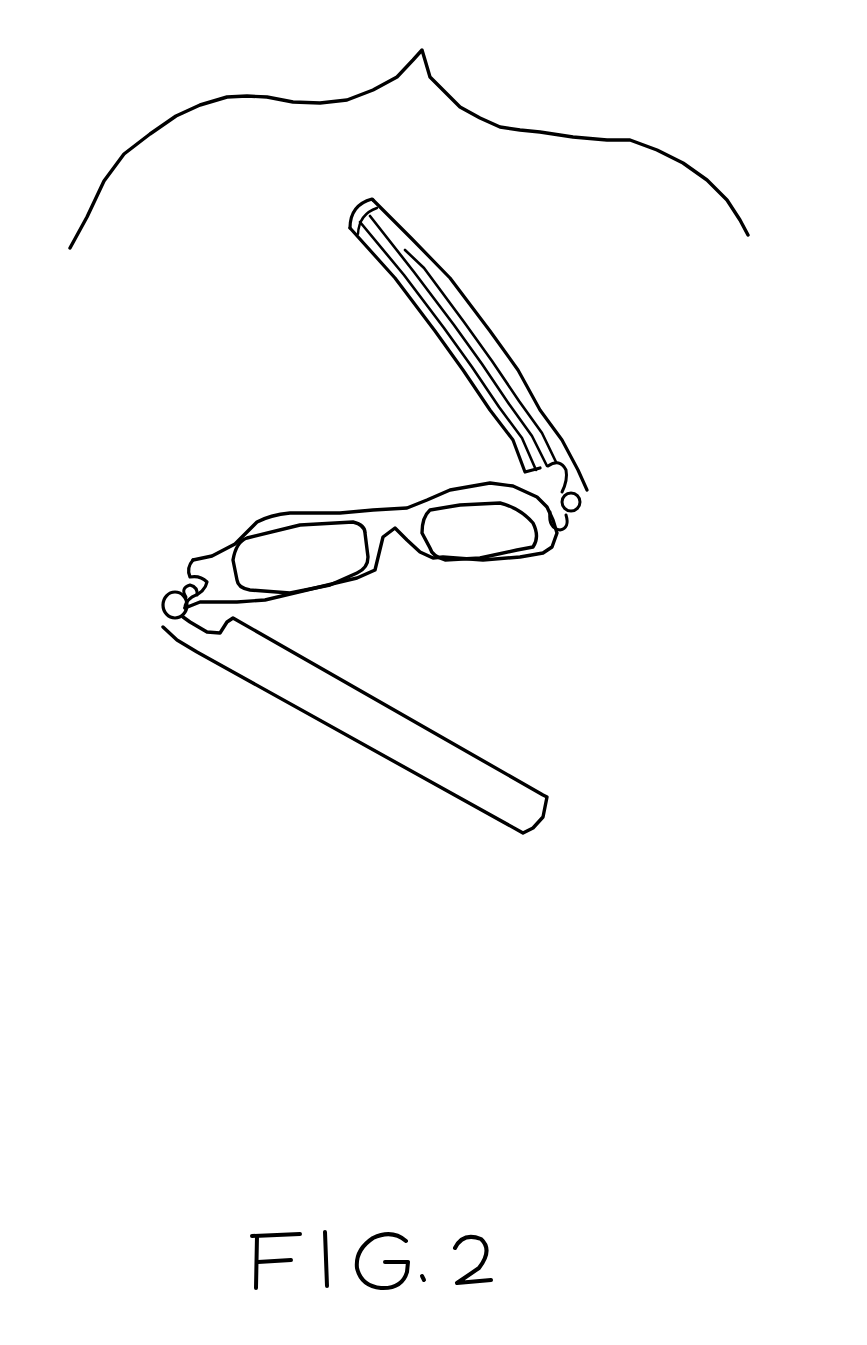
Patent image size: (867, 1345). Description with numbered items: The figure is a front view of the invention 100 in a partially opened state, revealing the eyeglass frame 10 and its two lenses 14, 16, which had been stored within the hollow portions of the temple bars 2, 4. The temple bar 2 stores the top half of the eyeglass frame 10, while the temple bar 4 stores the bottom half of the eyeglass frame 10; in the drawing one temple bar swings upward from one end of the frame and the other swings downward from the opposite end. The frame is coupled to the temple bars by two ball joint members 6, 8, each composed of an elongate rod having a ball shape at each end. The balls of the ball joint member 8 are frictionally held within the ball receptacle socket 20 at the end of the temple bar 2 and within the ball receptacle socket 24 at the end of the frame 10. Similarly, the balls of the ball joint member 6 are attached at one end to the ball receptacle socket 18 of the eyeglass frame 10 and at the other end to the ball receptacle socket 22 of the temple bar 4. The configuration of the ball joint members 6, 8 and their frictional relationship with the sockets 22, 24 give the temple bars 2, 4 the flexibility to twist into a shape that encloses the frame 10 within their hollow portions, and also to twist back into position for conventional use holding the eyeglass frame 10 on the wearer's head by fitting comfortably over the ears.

The invention 100 is at (409, 125).
The temple bar 2 is at (487, 317).
The temple bar 4 is at (407, 742).
The ball joint member 6 is at (186, 597).
The ball joint member 8 is at (573, 522).
The eyeglass frame 10 is at (287, 517).
The lens 14 is at (337, 578).
The lens 16 is at (487, 547).
The ball receptacle socket 18 is at (193, 560).
The ball receptacle socket 20 is at (585, 492).
The ball receptacle socket 22 is at (163, 610).
The ball receptacle socket 24 is at (558, 532).